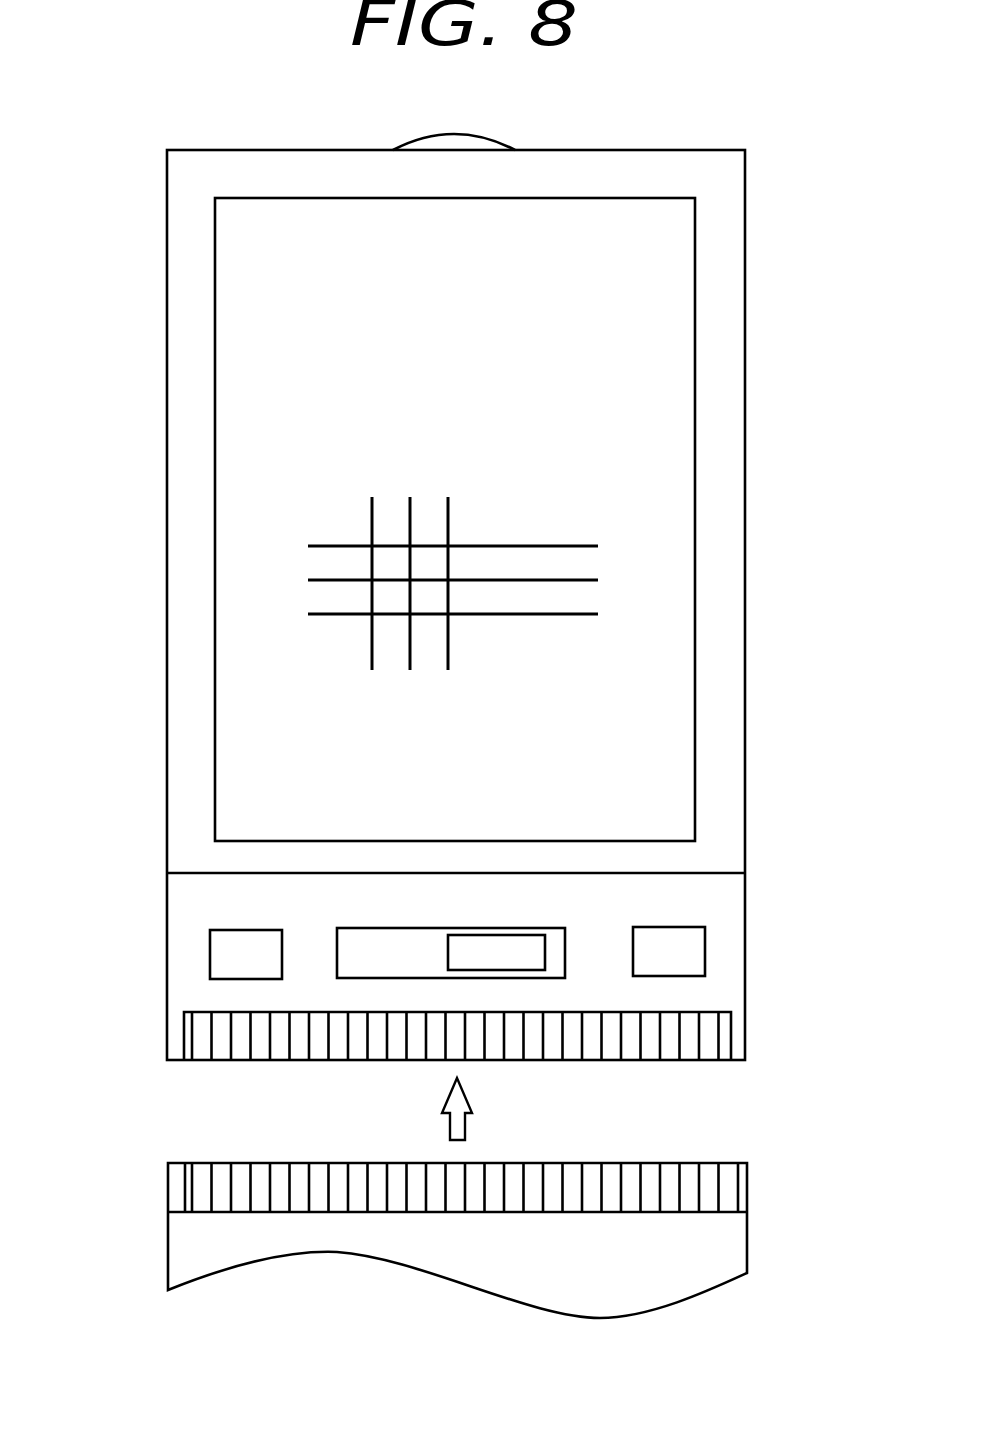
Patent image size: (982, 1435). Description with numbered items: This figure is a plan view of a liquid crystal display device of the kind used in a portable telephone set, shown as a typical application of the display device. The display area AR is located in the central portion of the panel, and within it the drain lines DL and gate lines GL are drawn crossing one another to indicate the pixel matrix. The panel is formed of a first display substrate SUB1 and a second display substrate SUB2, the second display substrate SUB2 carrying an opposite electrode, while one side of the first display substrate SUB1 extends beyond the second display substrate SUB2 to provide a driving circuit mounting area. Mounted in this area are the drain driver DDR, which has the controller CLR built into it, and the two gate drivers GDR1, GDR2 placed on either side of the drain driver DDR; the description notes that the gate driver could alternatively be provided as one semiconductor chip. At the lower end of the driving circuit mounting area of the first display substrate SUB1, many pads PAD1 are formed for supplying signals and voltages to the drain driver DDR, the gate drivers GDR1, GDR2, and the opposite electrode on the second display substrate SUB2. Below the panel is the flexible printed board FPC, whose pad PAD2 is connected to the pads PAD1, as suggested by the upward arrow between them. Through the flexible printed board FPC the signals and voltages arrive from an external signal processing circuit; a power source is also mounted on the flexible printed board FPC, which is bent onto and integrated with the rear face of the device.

The first display substrate SUB1 is at (728, 910).
The second display substrate SUB2 is at (732, 830).
The display area AR is at (477, 422).
The drain line DL is at (370, 520).
The gate line GL is at (533, 546).
The gate driver GDR1 is at (238, 957).
The gate driver GDR2 is at (705, 952).
The drain driver DDR is at (451, 953).
The controller CLR is at (496, 952).
The pads PAD1 is at (687, 1047).
The pad PAD2 is at (708, 1170).
The flexible printed board FPC is at (737, 1233).